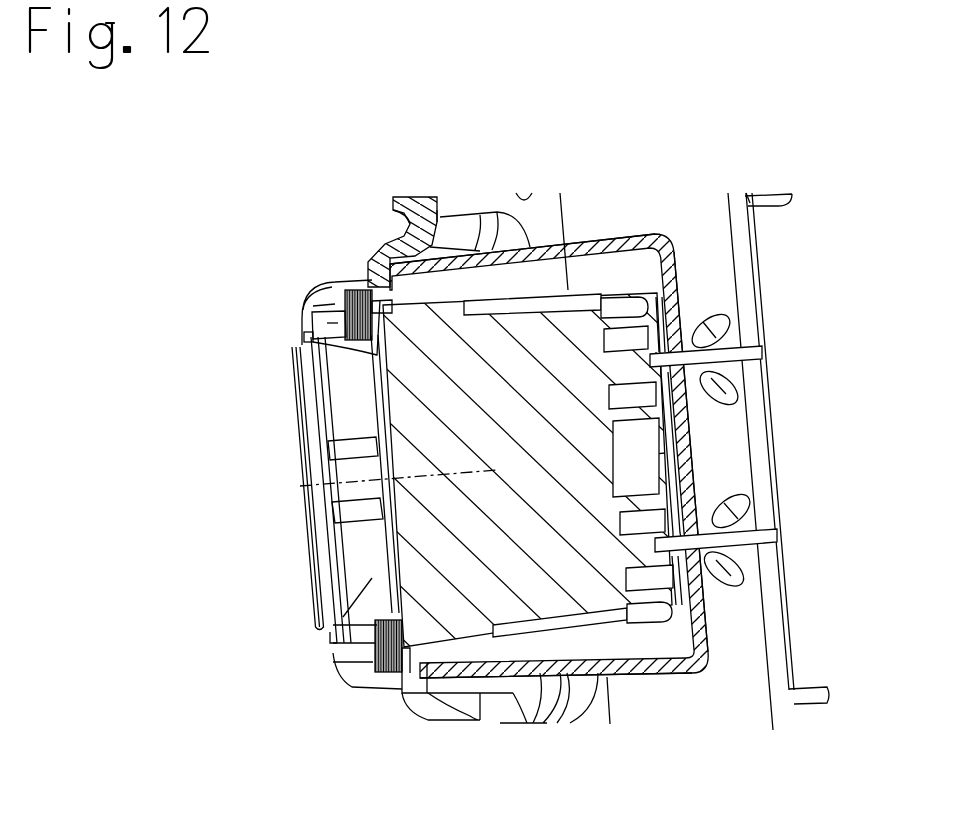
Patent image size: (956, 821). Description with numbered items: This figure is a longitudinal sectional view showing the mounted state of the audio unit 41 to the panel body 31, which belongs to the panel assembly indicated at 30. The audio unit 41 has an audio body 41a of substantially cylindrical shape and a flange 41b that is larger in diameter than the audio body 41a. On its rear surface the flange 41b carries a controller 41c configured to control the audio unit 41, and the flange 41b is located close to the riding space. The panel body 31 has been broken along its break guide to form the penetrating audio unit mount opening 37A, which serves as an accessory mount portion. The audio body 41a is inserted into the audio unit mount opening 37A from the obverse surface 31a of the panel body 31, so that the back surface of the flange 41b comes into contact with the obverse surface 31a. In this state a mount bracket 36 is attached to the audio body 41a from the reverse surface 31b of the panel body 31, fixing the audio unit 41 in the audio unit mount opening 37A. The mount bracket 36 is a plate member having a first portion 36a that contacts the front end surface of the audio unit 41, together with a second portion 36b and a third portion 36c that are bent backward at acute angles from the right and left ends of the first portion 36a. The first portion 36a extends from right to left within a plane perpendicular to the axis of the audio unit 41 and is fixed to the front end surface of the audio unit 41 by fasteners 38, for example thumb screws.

The stator 30 is at (440, 434).
The panel body 31 is at (352, 199).
The obverse surface 31a is at (392, 207).
The reverse surface 31b is at (438, 216).
The mount bracket 36 is at (605, 476).
The first portion 36a is at (682, 298).
The second portion 36b is at (591, 242).
The third portion 36c is at (625, 676).
The audio unit mount opening 37A is at (308, 337).
The fasteners 38 is at (728, 393).
The audio unit 41 is at (271, 540).
The audio body 41a is at (337, 630).
The flange 41b is at (340, 676).
The controller 41c is at (307, 560).